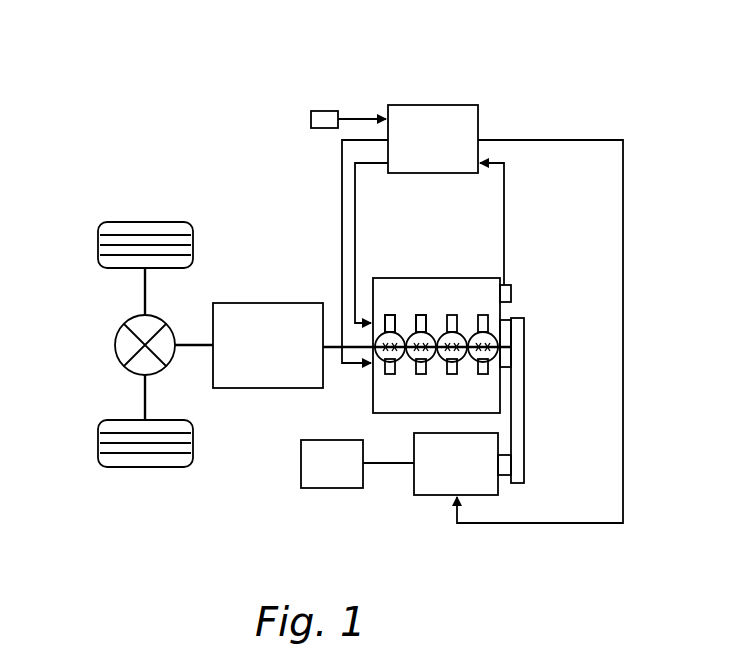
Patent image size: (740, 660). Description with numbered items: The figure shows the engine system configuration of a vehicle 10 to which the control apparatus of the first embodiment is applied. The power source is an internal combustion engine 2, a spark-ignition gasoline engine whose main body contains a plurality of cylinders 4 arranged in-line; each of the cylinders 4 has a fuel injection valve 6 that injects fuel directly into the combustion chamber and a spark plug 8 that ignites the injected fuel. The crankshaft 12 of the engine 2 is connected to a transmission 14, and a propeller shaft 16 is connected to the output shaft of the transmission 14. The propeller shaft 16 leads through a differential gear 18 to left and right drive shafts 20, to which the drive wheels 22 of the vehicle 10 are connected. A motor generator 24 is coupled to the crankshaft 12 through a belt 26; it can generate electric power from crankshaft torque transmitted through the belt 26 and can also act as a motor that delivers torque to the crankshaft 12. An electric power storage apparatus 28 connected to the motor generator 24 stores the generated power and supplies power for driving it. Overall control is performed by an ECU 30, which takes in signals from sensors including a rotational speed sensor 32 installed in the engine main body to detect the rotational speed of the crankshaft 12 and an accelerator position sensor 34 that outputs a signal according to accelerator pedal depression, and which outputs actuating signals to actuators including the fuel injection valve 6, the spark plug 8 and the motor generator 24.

The internal combustion engine 2 is at (494, 311).
The cylinders 4 is at (477, 332).
The fuel injection valve 6 is at (386, 374).
The spark plug 8 is at (381, 312).
The vehicle 10 is at (555, 87).
The crankshaft 12 is at (428, 332).
The transmission 14 is at (268, 303).
The propeller shaft 16 is at (192, 341).
The differential gear 18 is at (115, 345).
The drive shafts 20 is at (144, 296).
The drive wheels 22 is at (98, 247).
The motor generator 24 is at (440, 496).
The belt 26 is at (524, 404).
The electric power storage apparatus 28 is at (335, 489).
The ECU 30 is at (442, 105).
The rotational speed sensor 32 is at (512, 288).
The accelerator position sensor 34 is at (323, 111).